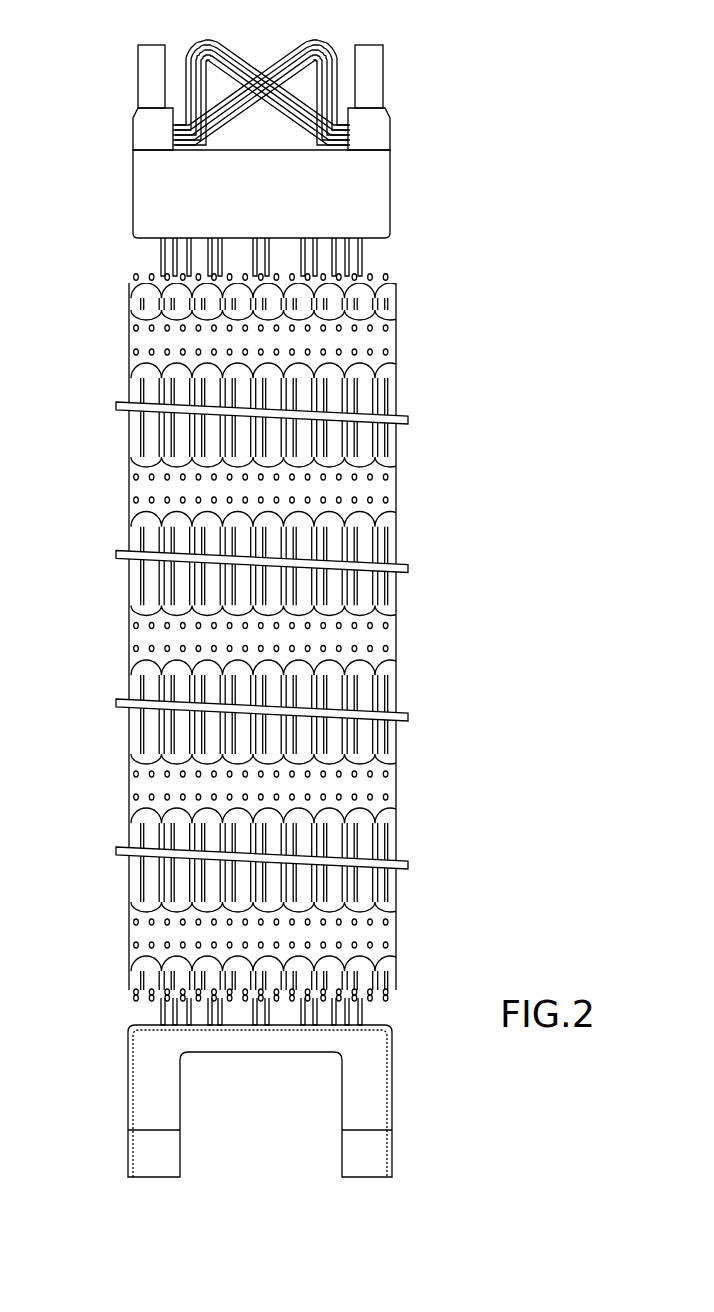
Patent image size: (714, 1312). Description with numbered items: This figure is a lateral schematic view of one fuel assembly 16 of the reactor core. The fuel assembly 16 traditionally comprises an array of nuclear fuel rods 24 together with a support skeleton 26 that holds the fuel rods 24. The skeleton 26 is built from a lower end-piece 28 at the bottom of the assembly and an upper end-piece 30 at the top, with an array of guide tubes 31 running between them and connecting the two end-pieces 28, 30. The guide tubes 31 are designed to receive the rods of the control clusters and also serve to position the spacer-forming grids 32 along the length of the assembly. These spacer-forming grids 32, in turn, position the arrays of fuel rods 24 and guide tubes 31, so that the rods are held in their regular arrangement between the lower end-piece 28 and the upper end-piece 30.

The fuel assembly 16 is at (407, 546).
The nuclear fuel rods 24 is at (388, 853).
The support skeleton 26 is at (407, 197).
The lower end-piece 28 is at (373, 1150).
The upper end-piece 30 is at (145, 190).
The guide tubes 31 is at (358, 262).
The spacer-forming grids 32 is at (135, 633).